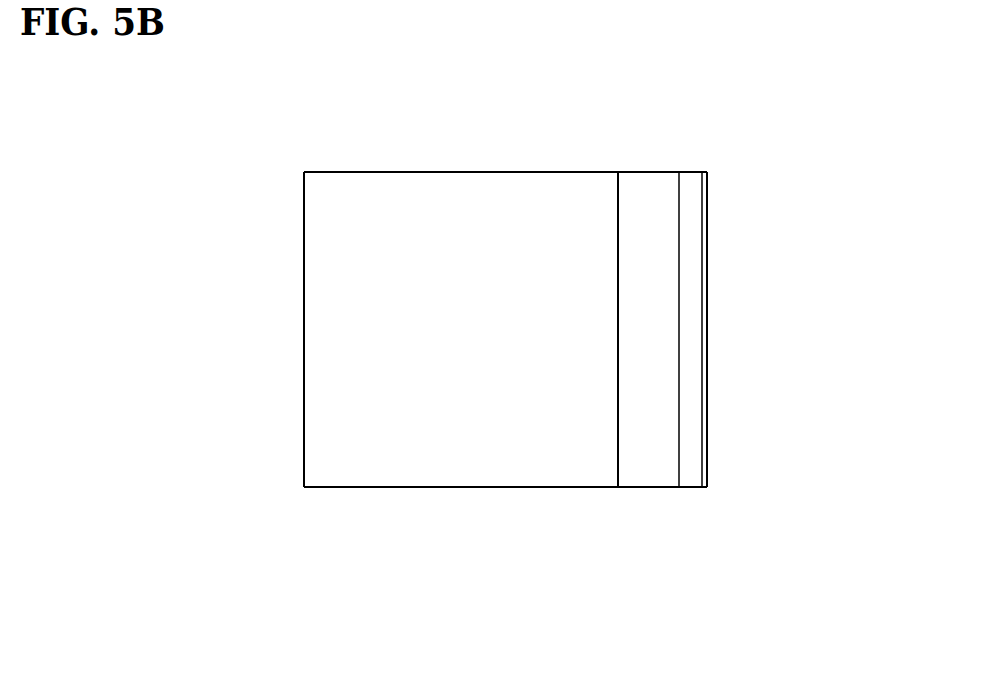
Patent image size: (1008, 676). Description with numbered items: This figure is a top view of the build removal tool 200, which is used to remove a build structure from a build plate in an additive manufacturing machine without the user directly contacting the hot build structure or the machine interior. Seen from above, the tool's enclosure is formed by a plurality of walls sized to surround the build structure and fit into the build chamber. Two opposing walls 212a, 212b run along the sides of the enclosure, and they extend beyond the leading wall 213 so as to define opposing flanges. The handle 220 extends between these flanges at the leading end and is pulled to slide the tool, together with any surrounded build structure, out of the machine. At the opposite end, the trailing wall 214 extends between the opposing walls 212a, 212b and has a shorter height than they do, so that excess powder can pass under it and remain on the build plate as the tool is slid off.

The build removal tool 200 is at (197, 126).
The opposing wall 212a is at (425, 173).
The opposing wall 212b is at (516, 490).
The leading wall 213 is at (618, 303).
The trailing wall 214 is at (304, 435).
The handle 220 is at (698, 395).